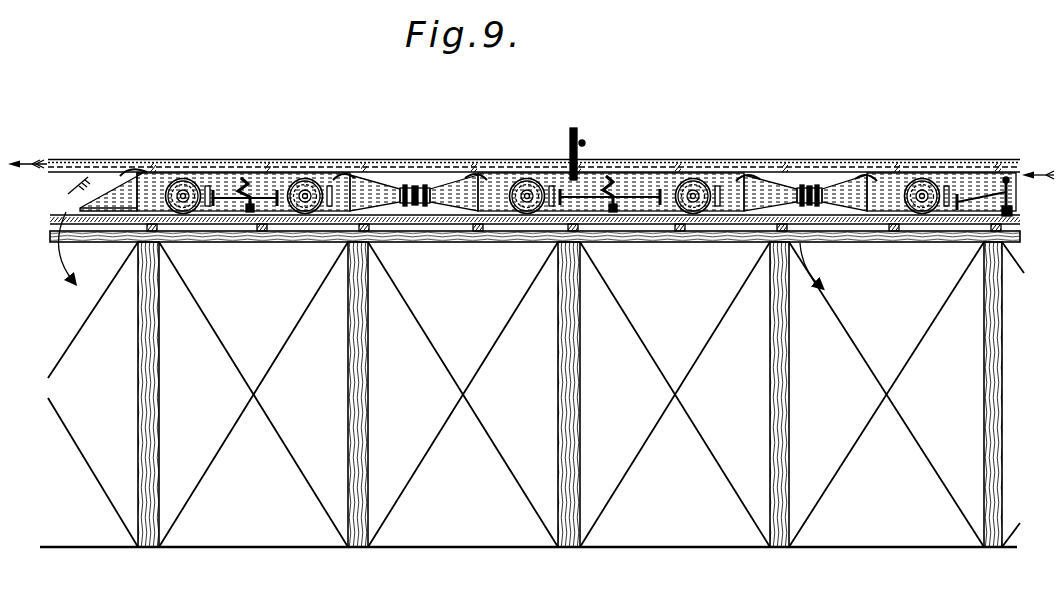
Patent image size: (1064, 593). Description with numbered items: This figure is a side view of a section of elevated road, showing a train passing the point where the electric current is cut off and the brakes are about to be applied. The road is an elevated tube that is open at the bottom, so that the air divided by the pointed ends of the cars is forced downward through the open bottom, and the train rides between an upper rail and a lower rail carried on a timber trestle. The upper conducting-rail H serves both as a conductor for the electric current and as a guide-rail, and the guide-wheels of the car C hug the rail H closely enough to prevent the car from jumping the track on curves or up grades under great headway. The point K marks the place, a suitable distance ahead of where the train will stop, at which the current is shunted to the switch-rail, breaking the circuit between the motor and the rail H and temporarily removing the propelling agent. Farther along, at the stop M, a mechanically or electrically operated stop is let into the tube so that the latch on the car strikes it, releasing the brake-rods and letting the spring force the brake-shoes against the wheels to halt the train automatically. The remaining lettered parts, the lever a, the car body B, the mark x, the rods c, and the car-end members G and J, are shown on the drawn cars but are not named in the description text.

The brake lever a is at (249, 176).
The car body B is at (215, 190).
The car nose x is at (108, 206).
The connecting rod c is at (609, 192).
The car end taper G is at (375, 191).
The car end J is at (287, 191).
The car C is at (498, 192).
The stop M is at (563, 154).
The conducting-rail H is at (810, 175).
The point where current is shunted K is at (984, 161).